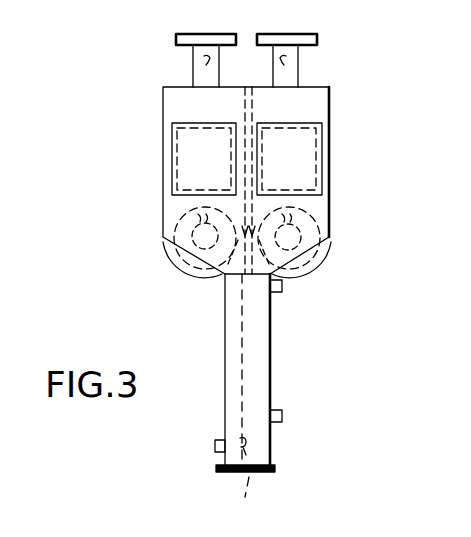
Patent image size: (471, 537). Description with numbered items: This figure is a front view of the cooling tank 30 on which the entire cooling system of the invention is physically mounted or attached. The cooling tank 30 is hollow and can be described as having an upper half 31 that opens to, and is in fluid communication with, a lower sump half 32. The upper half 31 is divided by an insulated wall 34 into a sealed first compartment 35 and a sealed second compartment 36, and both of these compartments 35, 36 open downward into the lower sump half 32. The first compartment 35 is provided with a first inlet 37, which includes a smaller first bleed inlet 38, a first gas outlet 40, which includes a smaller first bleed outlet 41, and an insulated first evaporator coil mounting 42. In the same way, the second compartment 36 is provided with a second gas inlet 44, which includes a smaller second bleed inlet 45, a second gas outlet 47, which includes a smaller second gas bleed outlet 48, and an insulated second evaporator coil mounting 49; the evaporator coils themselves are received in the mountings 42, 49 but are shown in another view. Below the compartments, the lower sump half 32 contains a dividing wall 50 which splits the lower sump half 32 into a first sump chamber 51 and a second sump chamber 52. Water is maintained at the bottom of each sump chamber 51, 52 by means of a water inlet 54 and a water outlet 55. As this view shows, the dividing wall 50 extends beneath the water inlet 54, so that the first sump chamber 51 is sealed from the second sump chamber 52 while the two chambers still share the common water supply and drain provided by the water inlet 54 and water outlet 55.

The cooling tank 30 is at (343, 42).
The upper half 31 is at (343, 186).
The lower sump half 32 is at (292, 343).
The insulated wall 34 is at (256, 95).
The first compartment 35 is at (199, 104).
The second compartment 36 is at (308, 107).
The first inlet 37 is at (192, 34).
The first bleed inlet 38 is at (205, 60).
The first gas outlet 40 is at (178, 258).
The first bleed outlet 41 is at (165, 228).
The insulated first evaporator coil mounting 42 is at (180, 195).
The second gas inlet 44 is at (283, 33).
The second bleed inlet 45 is at (300, 62).
The second gas outlet 47 is at (313, 263).
The second gas bleed outlet 48 is at (293, 217).
The insulated second evaporator coil mounting 49 is at (308, 160).
The dividing wall 50 is at (243, 302).
The first sump chamber 51 is at (236, 329).
The second sump chamber 52 is at (256, 384).
The water inlet 54 is at (213, 445).
The water outlet 55 is at (245, 399).